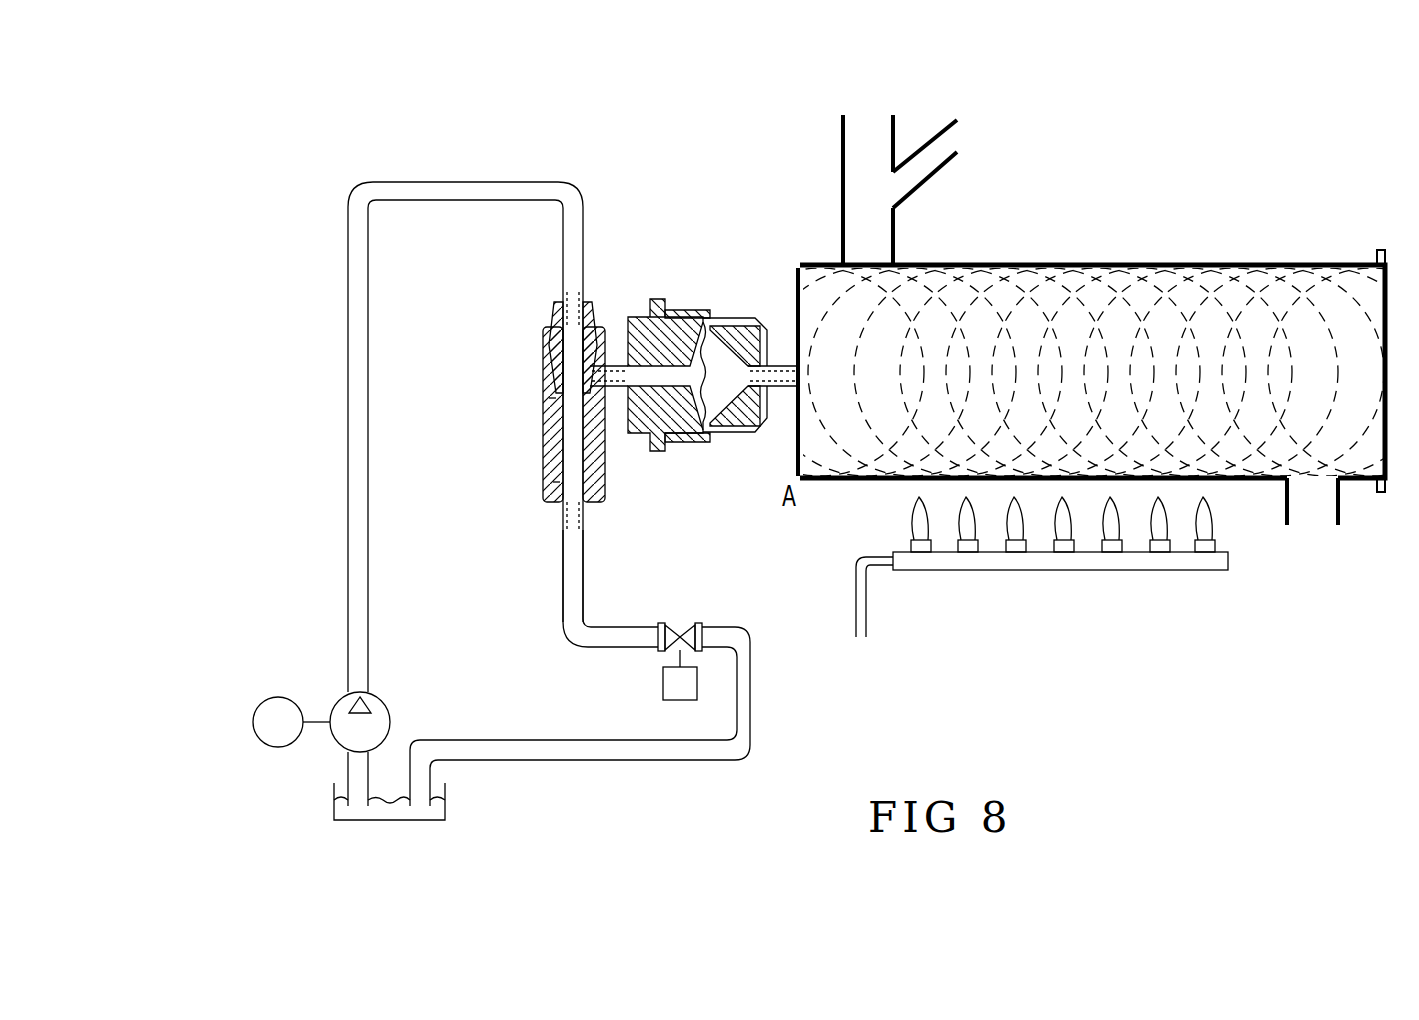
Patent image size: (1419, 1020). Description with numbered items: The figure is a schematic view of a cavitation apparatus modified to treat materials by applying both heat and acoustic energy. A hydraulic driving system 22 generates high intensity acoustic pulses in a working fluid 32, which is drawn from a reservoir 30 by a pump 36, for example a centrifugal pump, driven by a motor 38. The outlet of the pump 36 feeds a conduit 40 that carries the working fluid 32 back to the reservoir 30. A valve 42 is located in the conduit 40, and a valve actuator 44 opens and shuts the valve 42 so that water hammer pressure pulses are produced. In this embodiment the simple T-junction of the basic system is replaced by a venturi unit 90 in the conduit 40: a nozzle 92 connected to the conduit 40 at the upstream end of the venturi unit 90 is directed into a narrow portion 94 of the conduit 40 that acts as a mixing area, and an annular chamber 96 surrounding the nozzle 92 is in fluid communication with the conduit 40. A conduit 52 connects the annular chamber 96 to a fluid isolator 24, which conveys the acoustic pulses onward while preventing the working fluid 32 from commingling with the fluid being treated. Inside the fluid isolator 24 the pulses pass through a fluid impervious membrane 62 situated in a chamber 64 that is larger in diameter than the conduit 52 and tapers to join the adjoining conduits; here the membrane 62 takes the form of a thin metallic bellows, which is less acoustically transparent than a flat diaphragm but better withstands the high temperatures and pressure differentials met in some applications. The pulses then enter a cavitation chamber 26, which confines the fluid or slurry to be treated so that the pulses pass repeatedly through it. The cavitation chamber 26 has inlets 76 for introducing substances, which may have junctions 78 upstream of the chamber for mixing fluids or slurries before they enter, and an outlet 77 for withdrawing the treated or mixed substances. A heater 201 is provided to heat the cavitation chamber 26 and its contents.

The hydraulic driving system 22 is at (489, 170).
The fluid isolator 24 is at (714, 339).
The cavitation chamber 26 is at (1229, 244).
The reservoir 30 is at (334, 813).
The working fluid 32 is at (435, 812).
The pump 36 is at (340, 700).
The motor 38 is at (280, 690).
The conduit 40 is at (358, 390).
The valve 42 is at (688, 622).
The valve actuator 44 is at (677, 688).
The conduit 52 is at (613, 340).
The fluid impervious membrane 62 is at (722, 392).
The chamber 64 is at (715, 340).
The inlets 76 is at (826, 158).
The outlet 77 is at (1306, 525).
The junctions 78 is at (922, 168).
The venturi unit 90 is at (606, 480).
The nozzle 92 is at (548, 405).
The narrow portion 94 is at (548, 483).
The annular chamber 96 is at (547, 364).
The heater 201 is at (1152, 575).